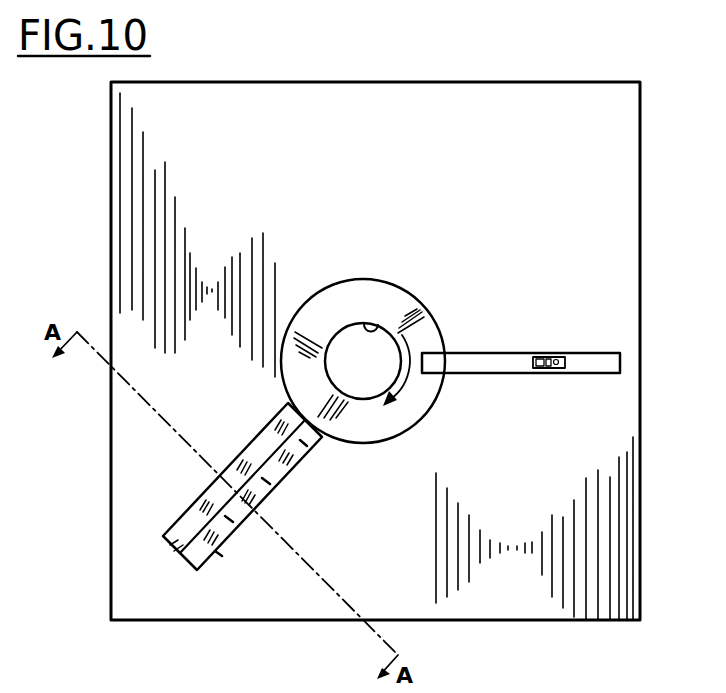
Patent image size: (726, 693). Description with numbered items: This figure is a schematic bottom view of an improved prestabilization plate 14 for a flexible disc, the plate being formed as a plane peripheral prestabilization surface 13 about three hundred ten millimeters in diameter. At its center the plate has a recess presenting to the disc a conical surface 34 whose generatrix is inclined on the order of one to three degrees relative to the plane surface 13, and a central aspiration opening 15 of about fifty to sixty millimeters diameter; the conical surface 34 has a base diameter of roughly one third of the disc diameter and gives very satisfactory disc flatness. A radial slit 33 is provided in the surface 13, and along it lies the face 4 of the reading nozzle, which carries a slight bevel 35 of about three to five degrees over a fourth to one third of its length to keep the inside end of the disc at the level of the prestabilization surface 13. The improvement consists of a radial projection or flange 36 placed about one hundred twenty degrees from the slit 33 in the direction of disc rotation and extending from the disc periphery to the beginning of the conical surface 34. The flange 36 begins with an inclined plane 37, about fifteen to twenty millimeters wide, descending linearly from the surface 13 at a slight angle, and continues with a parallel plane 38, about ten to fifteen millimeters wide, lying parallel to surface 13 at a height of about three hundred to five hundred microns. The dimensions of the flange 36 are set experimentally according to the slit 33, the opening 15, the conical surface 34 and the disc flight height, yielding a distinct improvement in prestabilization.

The prestabilization plate 14 is at (597, 82).
The prestabilization surface 13 is at (623, 558).
The conical surface 34 is at (407, 407).
The central aspiration opening 15 is at (371, 331).
The slit 33 is at (508, 362).
The bevel 35 is at (538, 369).
The face 4 is at (562, 369).
The radial flange 36 is at (168, 557).
The inclined plane 37 is at (283, 478).
The parallel plane 38 is at (240, 463).